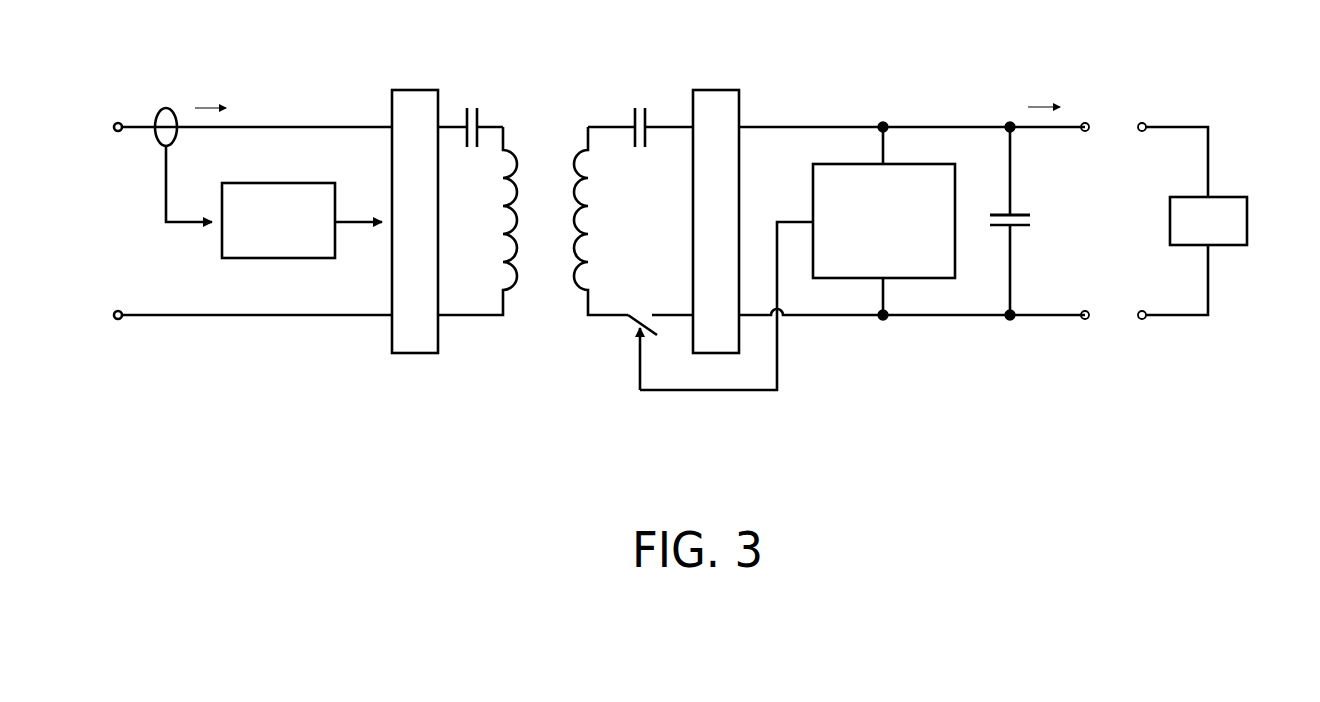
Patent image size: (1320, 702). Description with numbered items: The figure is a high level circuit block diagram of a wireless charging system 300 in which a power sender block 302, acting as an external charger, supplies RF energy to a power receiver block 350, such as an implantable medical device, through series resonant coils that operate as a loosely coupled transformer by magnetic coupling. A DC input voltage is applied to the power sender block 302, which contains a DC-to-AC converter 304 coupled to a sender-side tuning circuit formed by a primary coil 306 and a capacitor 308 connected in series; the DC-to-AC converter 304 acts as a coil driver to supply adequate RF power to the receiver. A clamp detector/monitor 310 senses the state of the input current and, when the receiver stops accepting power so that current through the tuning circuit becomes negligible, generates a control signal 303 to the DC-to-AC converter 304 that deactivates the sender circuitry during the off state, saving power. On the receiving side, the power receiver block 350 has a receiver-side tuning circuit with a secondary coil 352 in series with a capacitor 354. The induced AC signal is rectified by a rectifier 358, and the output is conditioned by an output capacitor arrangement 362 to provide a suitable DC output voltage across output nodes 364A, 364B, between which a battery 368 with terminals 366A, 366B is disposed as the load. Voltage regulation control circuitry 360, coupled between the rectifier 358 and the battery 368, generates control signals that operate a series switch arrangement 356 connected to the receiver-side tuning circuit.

The wireless charging system 300 is at (303, 485).
The power sender block 302 is at (297, 345).
The control signal 303 is at (372, 212).
The DC-to-AC converter 304 is at (417, 87).
The primary coil 306 is at (513, 240).
The capacitor 308 is at (478, 110).
The clamp detector/monitor 310 is at (267, 260).
The power receiver block 350 is at (1027, 373).
The secondary coil 352 is at (578, 240).
The capacitor 354 is at (633, 118).
The series switch arrangement 356 is at (627, 323).
The rectifier 358 is at (717, 87).
The voltage regulation control circuitry 360 is at (928, 280).
The output capacitor arrangement 362 is at (1022, 228).
The output node 364A is at (1090, 120).
The output node 364B is at (1090, 322).
The battery terminal 366A is at (1145, 122).
The battery terminal 366B is at (1147, 318).
The battery 368 is at (1228, 247).